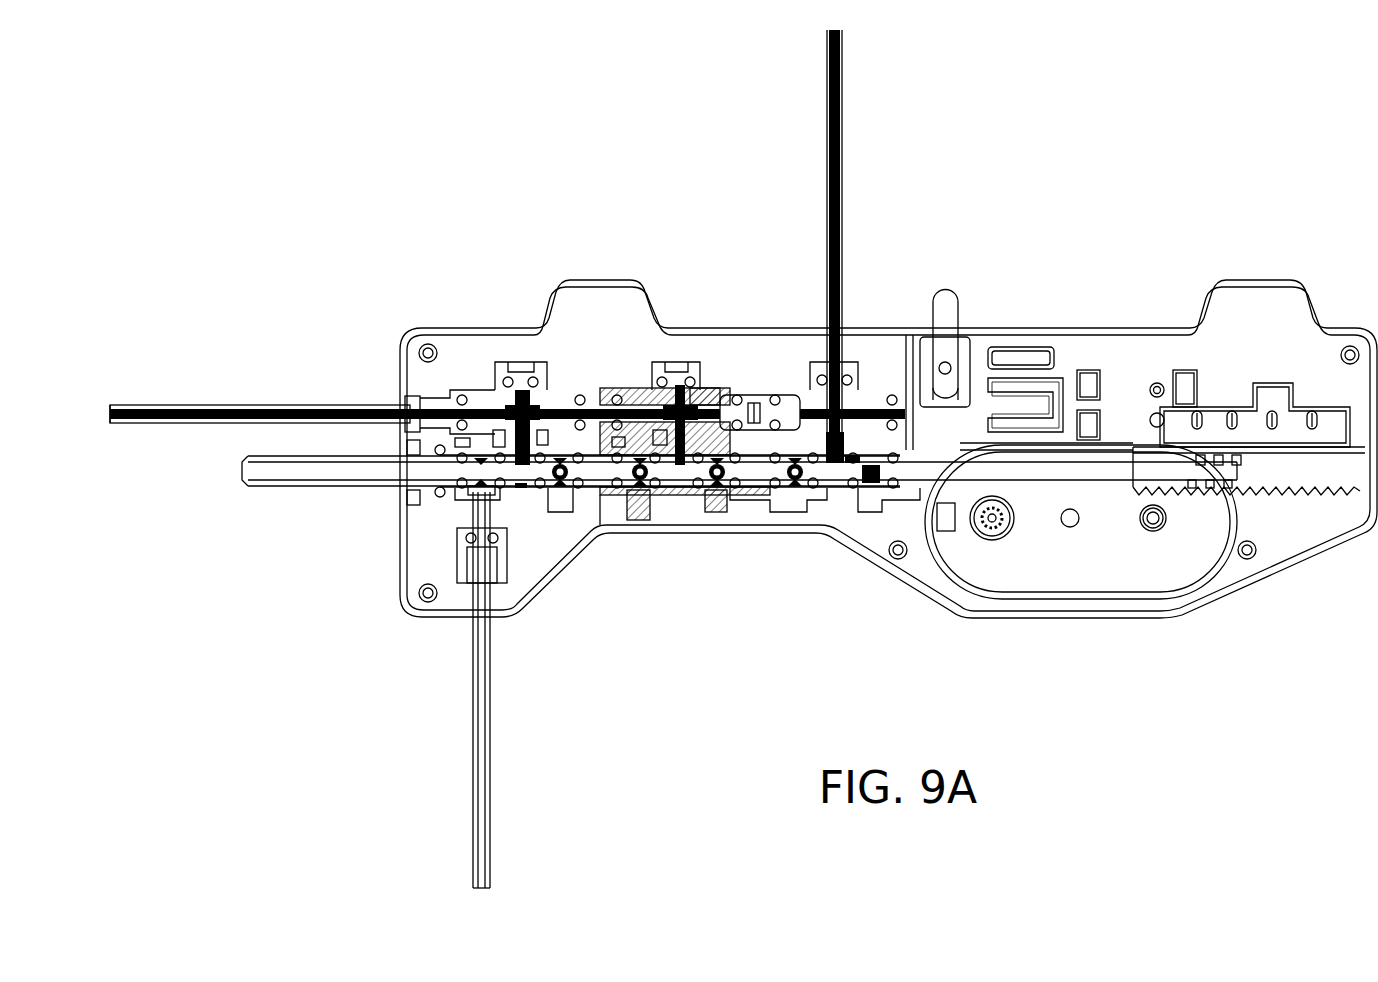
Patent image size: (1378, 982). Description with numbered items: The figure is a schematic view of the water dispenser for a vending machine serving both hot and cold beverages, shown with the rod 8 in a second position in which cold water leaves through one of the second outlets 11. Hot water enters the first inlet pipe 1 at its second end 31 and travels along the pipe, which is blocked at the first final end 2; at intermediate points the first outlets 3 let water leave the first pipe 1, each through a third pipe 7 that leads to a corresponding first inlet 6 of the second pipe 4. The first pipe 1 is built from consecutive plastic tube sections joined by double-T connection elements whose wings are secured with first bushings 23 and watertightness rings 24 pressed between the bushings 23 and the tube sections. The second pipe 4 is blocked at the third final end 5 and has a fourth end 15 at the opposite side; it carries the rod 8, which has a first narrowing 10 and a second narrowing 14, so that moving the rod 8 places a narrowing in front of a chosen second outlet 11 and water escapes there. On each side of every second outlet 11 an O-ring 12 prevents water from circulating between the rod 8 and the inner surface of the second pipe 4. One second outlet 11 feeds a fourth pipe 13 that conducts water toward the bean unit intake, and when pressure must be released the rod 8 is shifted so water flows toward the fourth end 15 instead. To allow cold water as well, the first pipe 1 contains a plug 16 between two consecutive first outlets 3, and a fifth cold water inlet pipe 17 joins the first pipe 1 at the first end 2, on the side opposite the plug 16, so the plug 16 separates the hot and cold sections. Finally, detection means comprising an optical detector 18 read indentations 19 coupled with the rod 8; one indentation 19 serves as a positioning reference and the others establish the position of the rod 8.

The first inlet pipe 1 is at (195, 408).
The first final end 2 is at (838, 420).
The first outlets 3 is at (512, 428).
The second pipe 4 is at (290, 487).
The third final end 5 is at (893, 490).
The first inlets 6 is at (521, 490).
The third pipe 7 is at (517, 403).
The rod 8 is at (456, 468).
The first narrowing 10 is at (840, 490).
The second outlets 11 is at (560, 482).
The O-ring 12 is at (460, 398).
The fourth pipe 13 is at (477, 745).
The second narrowing 14 is at (607, 490).
The fourth end 15 is at (214, 493).
The plug 16 is at (760, 395).
The fifth cold water inlet pipe 17 is at (827, 92).
The optical detector 18 is at (1155, 383).
The indentations 19 is at (1200, 455).
The first bushings 23 is at (597, 403).
The watertightness rings 24 is at (578, 400).
The second end 31 is at (110, 408).